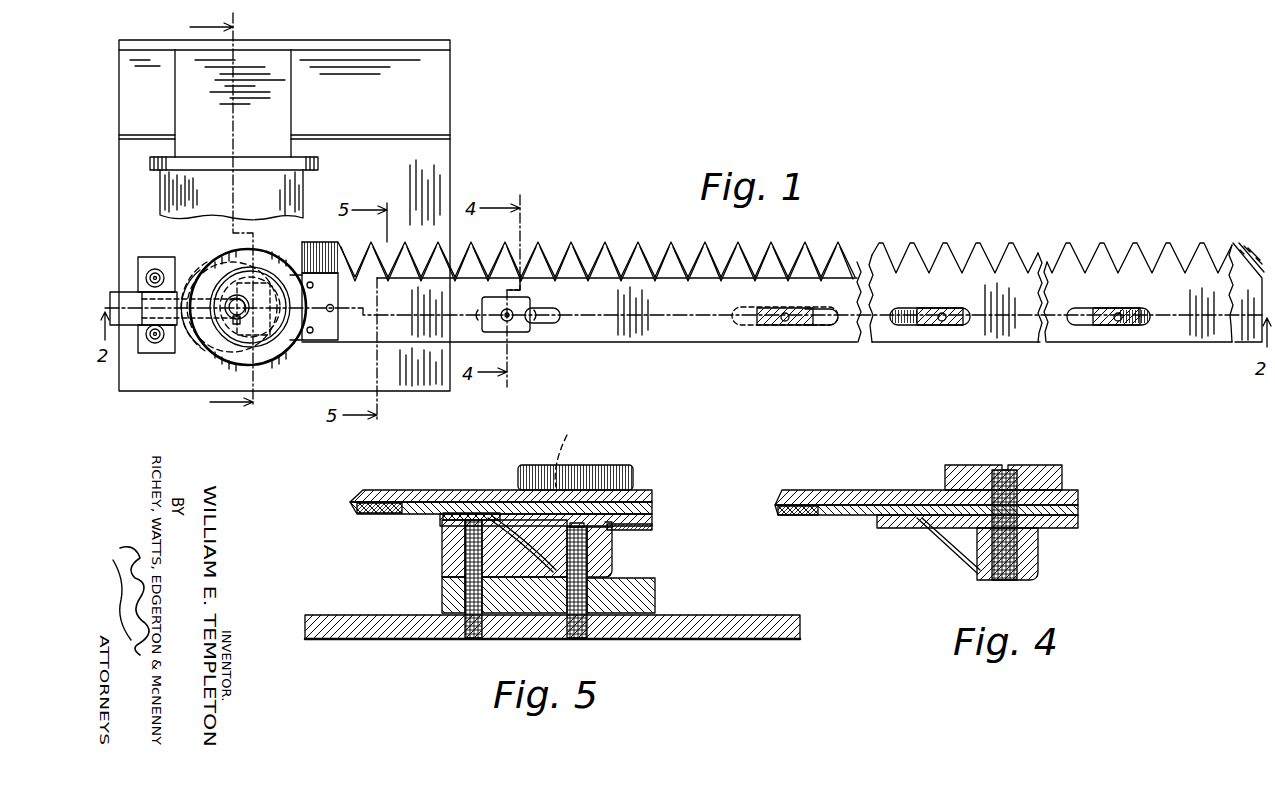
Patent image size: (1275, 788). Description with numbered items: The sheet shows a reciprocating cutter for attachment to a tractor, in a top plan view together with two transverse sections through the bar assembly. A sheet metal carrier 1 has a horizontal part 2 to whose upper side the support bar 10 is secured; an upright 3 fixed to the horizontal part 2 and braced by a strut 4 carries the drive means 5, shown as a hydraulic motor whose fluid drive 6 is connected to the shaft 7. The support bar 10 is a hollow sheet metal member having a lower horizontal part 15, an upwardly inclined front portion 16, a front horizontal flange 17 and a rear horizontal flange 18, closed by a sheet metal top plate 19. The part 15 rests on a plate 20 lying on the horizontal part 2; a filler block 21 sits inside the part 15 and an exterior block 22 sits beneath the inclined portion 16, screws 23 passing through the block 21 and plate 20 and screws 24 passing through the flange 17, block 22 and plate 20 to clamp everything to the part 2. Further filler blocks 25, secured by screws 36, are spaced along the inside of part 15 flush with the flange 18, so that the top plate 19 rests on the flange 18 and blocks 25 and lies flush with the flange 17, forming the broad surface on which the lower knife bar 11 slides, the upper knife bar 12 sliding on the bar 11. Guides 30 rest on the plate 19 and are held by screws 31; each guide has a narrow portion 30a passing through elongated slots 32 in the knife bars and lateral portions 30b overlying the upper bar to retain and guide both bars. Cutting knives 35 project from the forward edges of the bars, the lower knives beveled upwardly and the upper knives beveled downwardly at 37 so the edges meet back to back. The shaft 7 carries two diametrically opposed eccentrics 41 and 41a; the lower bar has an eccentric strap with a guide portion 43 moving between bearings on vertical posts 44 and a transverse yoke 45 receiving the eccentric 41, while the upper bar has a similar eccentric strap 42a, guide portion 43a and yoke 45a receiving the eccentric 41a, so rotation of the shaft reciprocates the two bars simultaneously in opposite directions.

In FIG. 1, the sheet metal carrier 1 is at (454, 60).
In FIG. 1, the horizontal part 2 is at (432, 182).
In FIG. 5, the horizontal part 2 is at (735, 625).
In FIG. 1, the upright 3 is at (306, 165).
In FIG. 1, the strut 4 is at (248, 70).
In FIG. 1, the drive means 5 is at (287, 197).
In FIG. 1, the fluid drive 6 is at (213, 212).
In FIG. 1, the shaft 7 is at (258, 308).
In FIG. 5, the support bar 10 is at (615, 548).
In FIG. 4, the support bar 10 is at (970, 584).
In FIG. 1, the knife bar 11 is at (1000, 327).
In FIG. 5, the knife bar 11 is at (392, 515).
In FIG. 4, the knife bar 11 is at (832, 508).
In FIG. 1, the knife bar 12 is at (313, 258).
In FIG. 5, the knife bar 12 is at (438, 490).
In FIG. 4, the knife bar 12 is at (845, 495).
In FIG. 5, the lower horizontal part 15 is at (603, 618).
In FIG. 4, the lower horizontal part 15 is at (1030, 580).
In FIG. 5, the upwardly inclined front portion 16 is at (506, 620).
In FIG. 4, the upwardly inclined front portion 16 is at (940, 540).
In FIG. 5, the front horizontal flange 17 is at (442, 519).
In FIG. 4, the front horizontal flange 17 is at (897, 520).
In FIG. 5, the rear horizontal flange 18 is at (652, 528).
In FIG. 4, the rear horizontal flange 18 is at (1078, 528).
In FIG. 5, the top plate 19 is at (652, 519).
In FIG. 4, the top plate 19 is at (1078, 520).
In FIG. 5, the plate 20 is at (640, 598).
In FIG. 5, the filler block 21 is at (563, 592).
In FIG. 5, the exterior block 22 is at (450, 552).
In FIG. 5, the screws 23 is at (595, 560).
In FIG. 5, the screws 24 is at (462, 598).
In FIG. 4, the filler blocks 25 is at (1040, 558).
In FIG. 1, the guides 30 is at (530, 333).
In FIG. 5, the guides 30 is at (595, 478).
In FIG. 4, the guides 30 is at (1050, 470).
In FIG. 1, the elongated relatively narrow portion 30a is at (773, 307).
In FIG. 5, the elongated relatively narrow portion 30a is at (573, 440).
In FIG. 4, the elongated relatively narrow portion 30a is at (985, 490).
In FIG. 4, the laterally projecting portions 30b is at (950, 470).
In FIG. 1, the screws 31 is at (510, 312).
In FIG. 4, the screws 31 is at (1010, 468).
In FIG. 1, the elongated slots 32 is at (560, 312).
In FIG. 4, the elongated slots 32 is at (960, 522).
In FIG. 1, the cutting knives 35 is at (610, 252).
In FIG. 5, the screws 36 is at (352, 512).
In FIG. 4, the screws 36 is at (780, 517).
In FIG. 5, the downwardly beveled edge 37 is at (355, 497).
In FIG. 4, the downwardly beveled edge 37 is at (780, 497).
In FIG. 1, the eccentric 41 is at (200, 332).
In FIG. 1, the eccentric 41a is at (260, 278).
In FIG. 1, the eccentric strap 42a is at (325, 324).
In FIG. 1, the guide portion 43 is at (130, 292).
In FIG. 1, the guide portion 43a is at (172, 293).
In FIG. 1, the vertical posts 44 is at (155, 270).
In FIG. 1, the yoke 45 is at (202, 346).
In FIG. 1, the yoke 45a is at (280, 362).